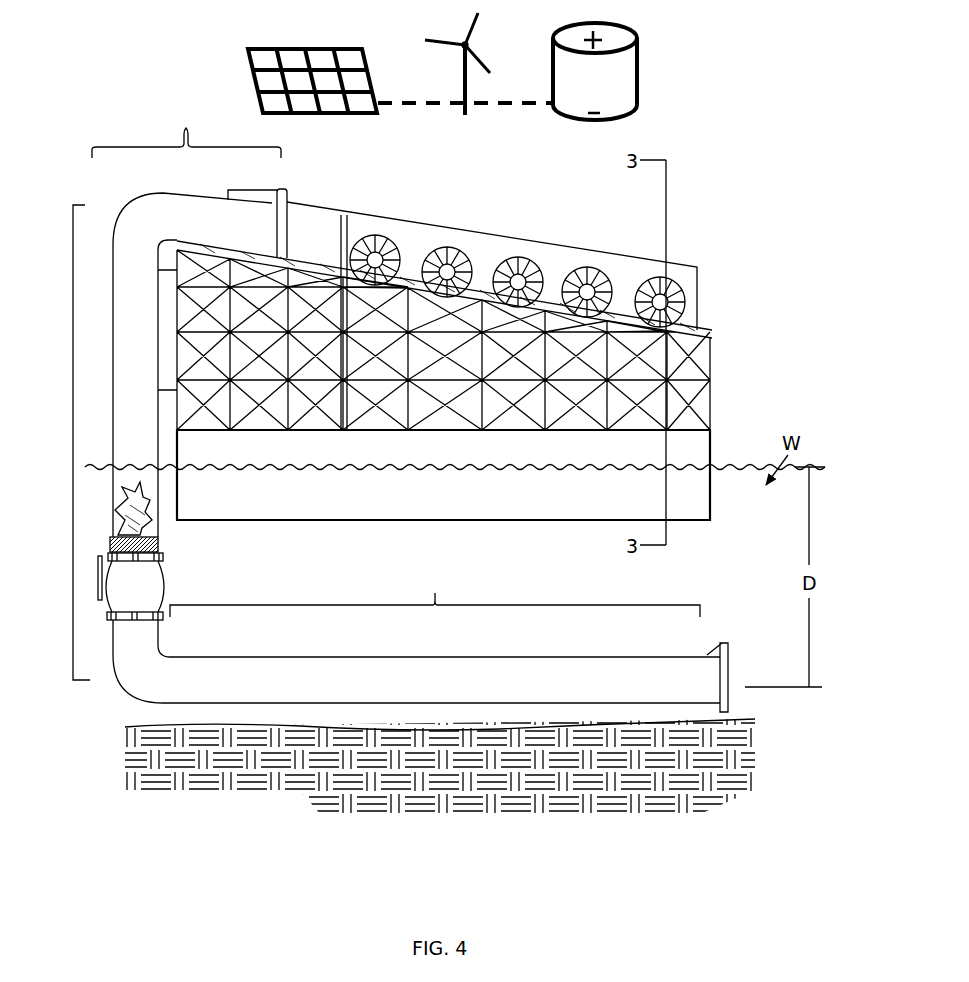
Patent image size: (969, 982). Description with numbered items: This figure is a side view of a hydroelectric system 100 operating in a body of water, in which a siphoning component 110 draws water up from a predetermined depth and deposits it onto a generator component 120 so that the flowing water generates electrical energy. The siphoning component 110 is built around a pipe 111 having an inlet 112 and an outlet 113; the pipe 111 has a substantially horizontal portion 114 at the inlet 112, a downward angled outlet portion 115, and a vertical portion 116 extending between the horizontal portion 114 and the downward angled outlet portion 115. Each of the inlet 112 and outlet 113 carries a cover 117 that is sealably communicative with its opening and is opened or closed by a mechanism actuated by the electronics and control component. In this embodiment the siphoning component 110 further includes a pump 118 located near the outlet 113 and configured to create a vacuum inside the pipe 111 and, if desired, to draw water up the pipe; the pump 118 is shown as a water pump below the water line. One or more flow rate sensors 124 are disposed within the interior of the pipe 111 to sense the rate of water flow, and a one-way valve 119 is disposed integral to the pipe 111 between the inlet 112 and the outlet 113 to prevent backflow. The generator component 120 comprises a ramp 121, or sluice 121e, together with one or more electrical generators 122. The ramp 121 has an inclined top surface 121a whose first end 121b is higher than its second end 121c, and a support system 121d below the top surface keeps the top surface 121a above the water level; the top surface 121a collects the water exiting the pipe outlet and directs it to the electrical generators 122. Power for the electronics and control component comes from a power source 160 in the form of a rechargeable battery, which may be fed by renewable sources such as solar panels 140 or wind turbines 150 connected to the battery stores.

The hydroelectric system 100 is at (94, 55).
The solar panels 140 is at (258, 88).
The wind turbines 150 is at (458, 88).
The power source 160 is at (640, 80).
The downward angled outlet portion 115 is at (186, 129).
The outlet 113 is at (275, 222).
The covers 117 is at (292, 231).
The siphoning component 110 is at (98, 278).
The pipe 111 is at (128, 407).
The vertical portion 116 is at (73, 447).
The generator component 120 is at (750, 289).
The ramp 121 is at (720, 372).
The inclined top surface 121a is at (315, 264).
The first end 121b is at (175, 246).
The second end 121c is at (718, 333).
The support system 121d is at (700, 417).
The sluice 121e is at (342, 263).
The electrical generator 122 is at (387, 248).
The flow rate sensors 124 is at (126, 512).
The pump 118 is at (106, 540).
The one-way valve 119 is at (104, 590).
The inlet 112 is at (716, 672).
The substantially horizontal portion 114 is at (435, 588).